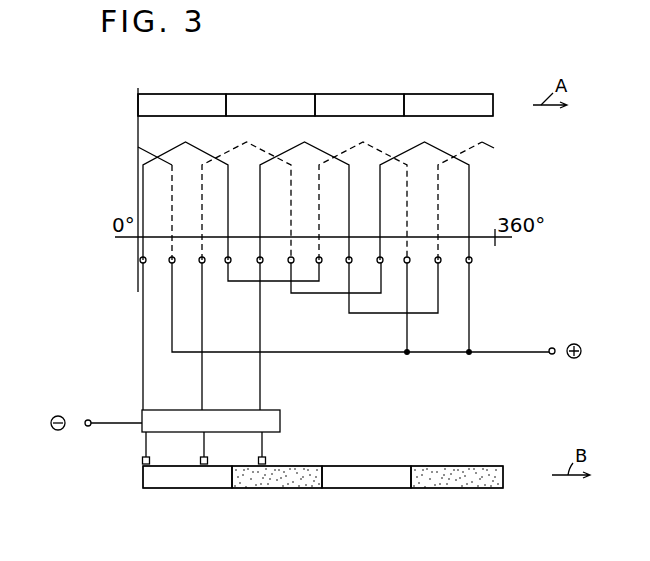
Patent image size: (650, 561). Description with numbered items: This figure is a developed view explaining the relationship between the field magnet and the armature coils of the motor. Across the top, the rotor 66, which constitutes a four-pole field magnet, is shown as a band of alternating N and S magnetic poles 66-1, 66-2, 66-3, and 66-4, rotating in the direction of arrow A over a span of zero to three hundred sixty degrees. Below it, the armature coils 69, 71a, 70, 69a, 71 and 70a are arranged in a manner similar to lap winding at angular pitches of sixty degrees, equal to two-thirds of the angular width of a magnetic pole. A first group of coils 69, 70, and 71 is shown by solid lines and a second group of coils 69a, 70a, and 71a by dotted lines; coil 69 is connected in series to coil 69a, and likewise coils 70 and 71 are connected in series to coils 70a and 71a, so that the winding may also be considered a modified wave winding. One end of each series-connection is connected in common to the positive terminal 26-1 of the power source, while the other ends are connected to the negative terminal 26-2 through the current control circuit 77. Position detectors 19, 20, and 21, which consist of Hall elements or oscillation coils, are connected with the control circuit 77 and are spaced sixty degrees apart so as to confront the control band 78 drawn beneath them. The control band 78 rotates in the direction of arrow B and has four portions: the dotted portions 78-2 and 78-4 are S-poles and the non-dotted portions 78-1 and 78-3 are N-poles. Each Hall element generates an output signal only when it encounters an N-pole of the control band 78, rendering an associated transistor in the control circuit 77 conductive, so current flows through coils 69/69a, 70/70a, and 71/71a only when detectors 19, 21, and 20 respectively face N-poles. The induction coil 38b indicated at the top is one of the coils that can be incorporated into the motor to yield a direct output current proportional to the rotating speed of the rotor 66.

The induction coil 38b is at (289, 0).
The rotor 66 is at (460, 67).
The magnetic pole 66-1 is at (162, 100).
The magnetic pole 66-2 is at (250, 100).
The magnetic pole 66-3 is at (330, 100).
The magnetic pole 66-4 is at (413, 100).
The armature coil 69 is at (193, 148).
The armature coil 69a is at (365, 149).
The armature coil 70 is at (312, 148).
The armature coil 70a is at (486, 148).
The armature coil 71 is at (431, 149).
The armature coil 71a is at (245, 149).
The positive terminal 26-1 is at (554, 348).
The negative terminal 26-2 is at (87, 419).
The current control circuit 77 is at (281, 411).
The position detector 19 is at (142, 459).
The position detector 20 is at (208, 459).
The position detector 21 is at (267, 459).
The control band 78 is at (141, 478).
The non-dotted portion 78-1 is at (168, 482).
The dotted portion 78-2 is at (256, 482).
The non-dotted portion 78-3 is at (347, 482).
The dotted portion 78-4 is at (433, 484).